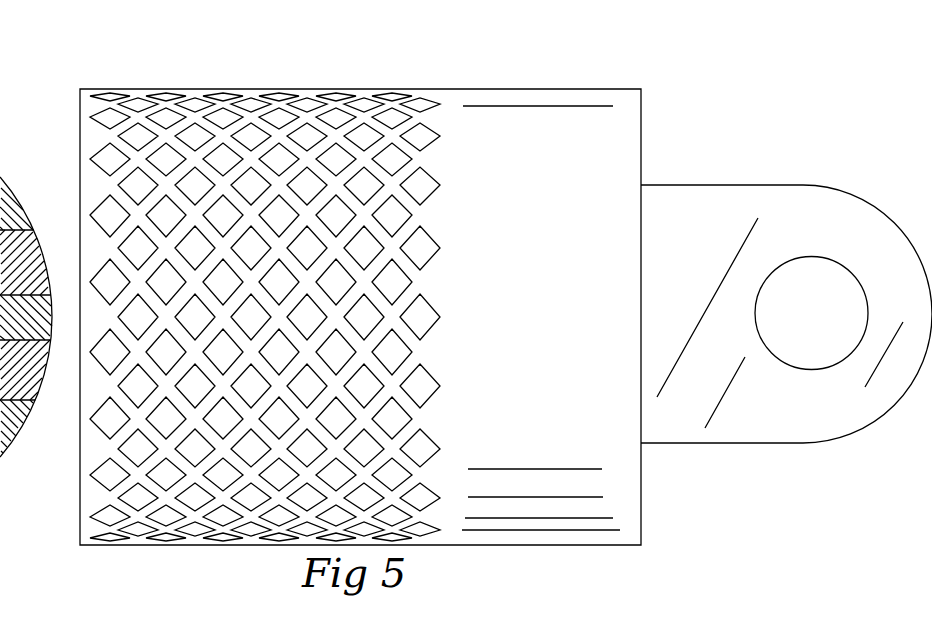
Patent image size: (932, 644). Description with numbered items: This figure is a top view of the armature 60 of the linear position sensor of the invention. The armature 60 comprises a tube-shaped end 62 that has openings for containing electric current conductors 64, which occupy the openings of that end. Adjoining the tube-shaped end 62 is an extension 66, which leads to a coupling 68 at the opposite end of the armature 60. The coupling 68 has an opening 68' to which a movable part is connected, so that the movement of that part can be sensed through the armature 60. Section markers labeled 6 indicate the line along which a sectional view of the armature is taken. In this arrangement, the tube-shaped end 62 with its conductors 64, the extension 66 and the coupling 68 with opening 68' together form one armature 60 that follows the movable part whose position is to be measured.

The section line 6- 6 is at (113, 62).
The armature 60 is at (684, 138).
The tube-shaped end 62 is at (97, 137).
The electric current conductors 64 is at (333, 117).
The extension 66 is at (553, 310).
The coupling 68 is at (786, 314).
The opening 68' is at (811, 313).